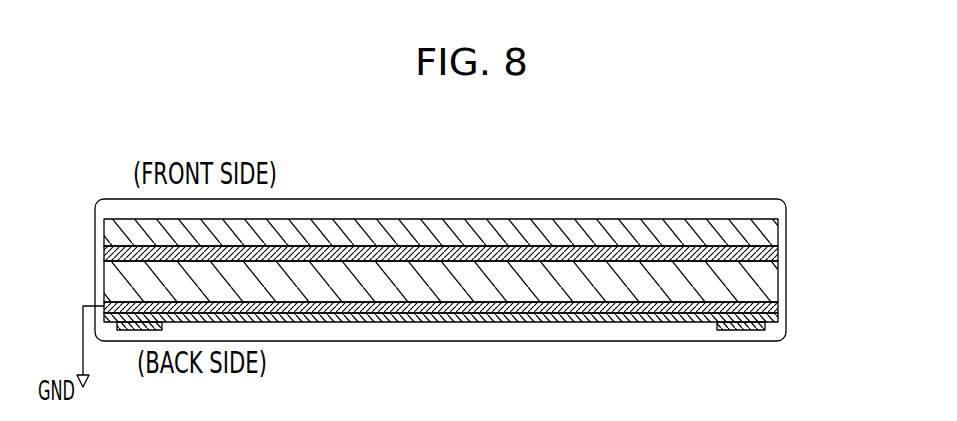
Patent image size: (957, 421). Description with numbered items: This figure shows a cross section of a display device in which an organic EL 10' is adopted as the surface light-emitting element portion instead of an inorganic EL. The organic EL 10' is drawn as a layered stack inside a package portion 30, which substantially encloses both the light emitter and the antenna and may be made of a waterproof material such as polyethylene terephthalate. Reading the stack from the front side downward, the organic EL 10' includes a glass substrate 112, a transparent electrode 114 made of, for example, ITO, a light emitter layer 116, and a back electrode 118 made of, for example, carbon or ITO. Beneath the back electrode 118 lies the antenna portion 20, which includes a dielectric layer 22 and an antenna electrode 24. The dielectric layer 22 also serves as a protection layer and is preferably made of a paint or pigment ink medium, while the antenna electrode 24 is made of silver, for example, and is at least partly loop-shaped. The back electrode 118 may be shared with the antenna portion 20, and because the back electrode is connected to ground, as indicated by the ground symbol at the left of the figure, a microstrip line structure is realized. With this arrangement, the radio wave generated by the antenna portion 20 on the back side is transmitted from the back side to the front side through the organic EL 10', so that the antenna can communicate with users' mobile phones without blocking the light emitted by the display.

The organic EL 10' is at (500, 256).
The glass substrate 112 is at (780, 229).
The transparent electrode 114 is at (780, 253).
The light emitter layer 116 is at (780, 279).
The back electrode 118 is at (476, 296).
The antenna portion 20 is at (497, 331).
The dielectric layer 22 is at (780, 320).
The antenna electrode 24 is at (766, 330).
The package portion 30 is at (733, 199).